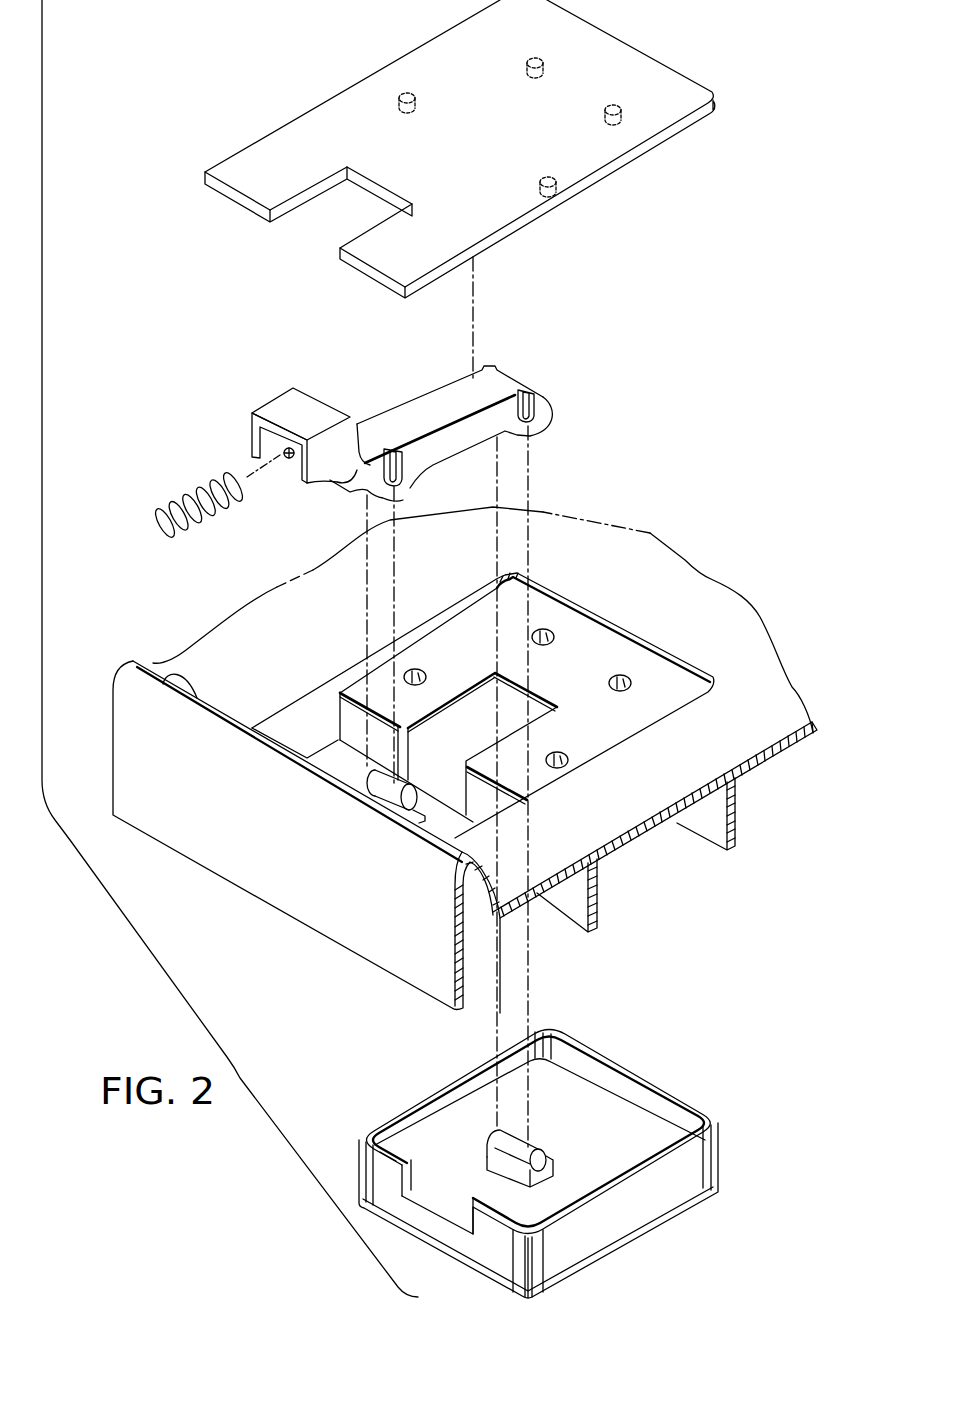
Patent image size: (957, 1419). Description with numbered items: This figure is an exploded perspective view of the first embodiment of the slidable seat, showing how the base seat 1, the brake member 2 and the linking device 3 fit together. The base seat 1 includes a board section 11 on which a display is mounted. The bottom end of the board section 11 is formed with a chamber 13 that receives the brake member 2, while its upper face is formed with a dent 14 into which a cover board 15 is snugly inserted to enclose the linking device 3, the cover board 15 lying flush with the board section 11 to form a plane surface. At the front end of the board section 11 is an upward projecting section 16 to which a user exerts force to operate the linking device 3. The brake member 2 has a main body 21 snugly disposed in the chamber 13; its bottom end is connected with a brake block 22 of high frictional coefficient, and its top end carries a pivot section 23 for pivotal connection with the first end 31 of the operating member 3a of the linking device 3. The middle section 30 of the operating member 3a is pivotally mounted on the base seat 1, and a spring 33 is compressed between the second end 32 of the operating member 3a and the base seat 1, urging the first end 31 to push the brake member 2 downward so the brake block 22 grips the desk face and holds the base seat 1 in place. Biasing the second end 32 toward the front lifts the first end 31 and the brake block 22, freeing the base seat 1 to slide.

The base seat 1 is at (150, 660).
The brake member 2 is at (651, 1066).
The linking device 3 is at (337, 390).
The operating member 3a is at (433, 410).
The board section 11 is at (697, 598).
The chamber 13 is at (448, 710).
The dent 14 is at (675, 705).
The cover board 15 is at (313, 117).
The upward projecting section 16 is at (165, 680).
The main body 21 is at (373, 1123).
The brake block 22 is at (673, 1227).
The pivot section 23 is at (487, 1147).
The middle section 30 is at (400, 484).
The first end 31 is at (548, 418).
The second end 32 is at (280, 402).
The spring 33 is at (213, 477).